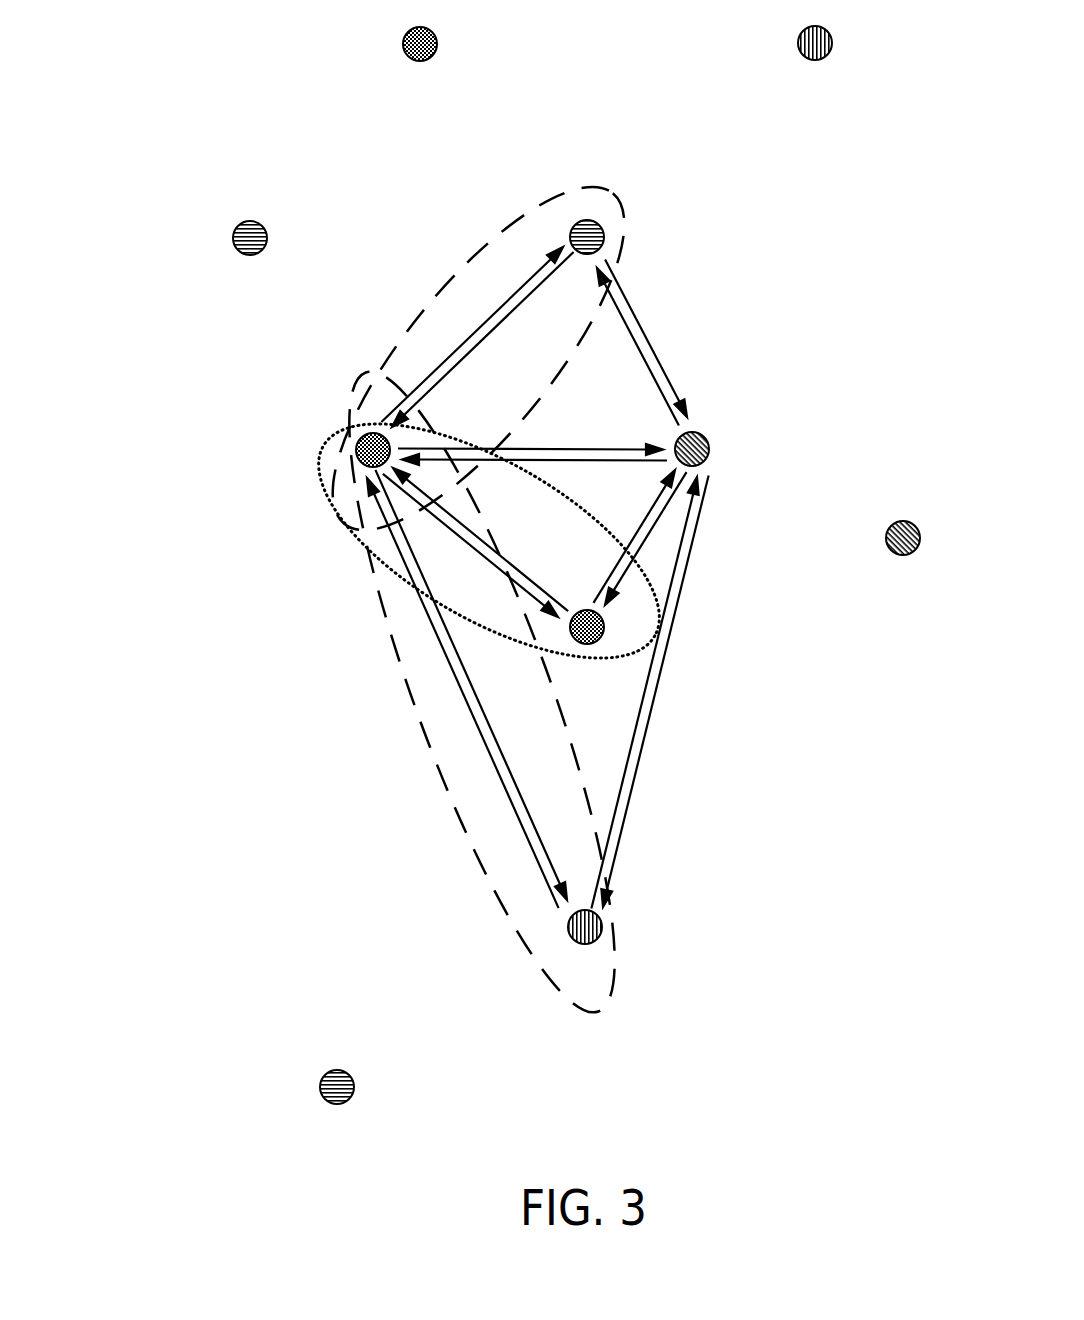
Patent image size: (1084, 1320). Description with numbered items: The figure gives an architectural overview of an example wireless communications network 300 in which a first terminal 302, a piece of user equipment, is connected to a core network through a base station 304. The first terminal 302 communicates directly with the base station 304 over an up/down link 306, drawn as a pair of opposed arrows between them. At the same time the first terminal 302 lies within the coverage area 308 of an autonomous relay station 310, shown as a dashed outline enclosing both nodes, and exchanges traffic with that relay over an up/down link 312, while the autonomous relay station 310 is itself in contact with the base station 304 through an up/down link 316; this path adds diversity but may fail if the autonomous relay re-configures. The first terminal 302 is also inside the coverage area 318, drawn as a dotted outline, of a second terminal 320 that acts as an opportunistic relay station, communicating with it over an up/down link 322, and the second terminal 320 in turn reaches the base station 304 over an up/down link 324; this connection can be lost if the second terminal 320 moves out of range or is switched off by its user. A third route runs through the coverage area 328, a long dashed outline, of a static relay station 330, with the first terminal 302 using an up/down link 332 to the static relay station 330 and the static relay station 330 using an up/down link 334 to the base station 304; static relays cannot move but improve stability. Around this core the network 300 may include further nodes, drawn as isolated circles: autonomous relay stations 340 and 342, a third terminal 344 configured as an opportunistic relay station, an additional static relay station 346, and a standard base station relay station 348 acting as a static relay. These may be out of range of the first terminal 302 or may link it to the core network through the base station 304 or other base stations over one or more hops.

The wireless communications network 300 is at (226, 82).
The first terminal 302 is at (360, 440).
The base station 304 is at (702, 437).
The up/down link 306 is at (527, 455).
The coverage area 308 is at (515, 221).
The autonomous relay station 310 is at (598, 218).
The up/down link 312 is at (488, 336).
The up/down link 316 is at (640, 335).
The coverage area 318 is at (360, 538).
The second terminal 320 is at (607, 627).
The up/down link 322 is at (472, 542).
The up/down link 324 is at (653, 517).
The coverage area 328 is at (497, 893).
The static relay station 330 is at (587, 927).
The up/down link 332 is at (470, 710).
The up/down link 334 is at (647, 713).
The autonomous relay station 340 is at (330, 1072).
The autonomous relay station 342 is at (233, 236).
The third terminal 344 is at (404, 31).
The static relay station 346 is at (797, 41).
The standard base station relay station 348 is at (888, 532).